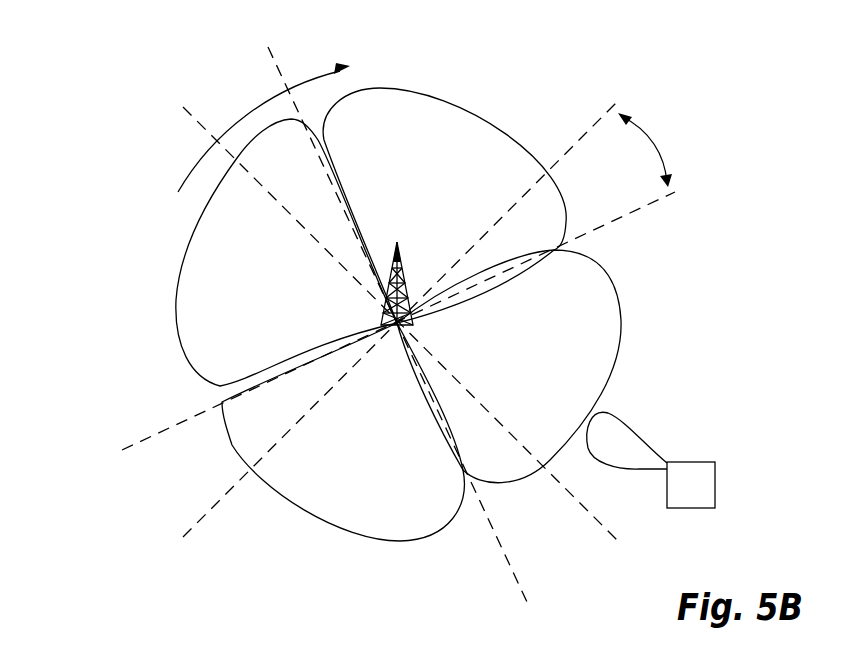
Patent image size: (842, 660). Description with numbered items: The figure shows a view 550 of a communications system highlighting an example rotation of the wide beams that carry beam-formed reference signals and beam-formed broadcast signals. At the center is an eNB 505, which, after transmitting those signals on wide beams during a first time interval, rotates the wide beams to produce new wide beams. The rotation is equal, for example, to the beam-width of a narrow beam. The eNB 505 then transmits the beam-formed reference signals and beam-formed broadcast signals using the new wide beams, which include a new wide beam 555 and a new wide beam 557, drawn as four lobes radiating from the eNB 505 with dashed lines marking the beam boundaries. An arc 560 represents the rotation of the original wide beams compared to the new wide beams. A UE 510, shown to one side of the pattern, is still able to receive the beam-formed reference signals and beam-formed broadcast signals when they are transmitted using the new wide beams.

The view 550 is at (90, 57).
The new wide beam 555 is at (462, 122).
The new wide beam 557 is at (603, 317).
The arc 560 is at (655, 134).
The eNB 505 is at (404, 272).
The UE 510 is at (705, 462).